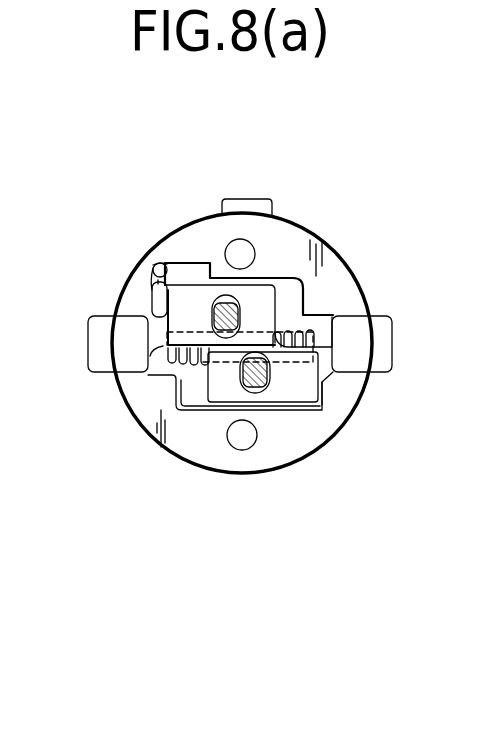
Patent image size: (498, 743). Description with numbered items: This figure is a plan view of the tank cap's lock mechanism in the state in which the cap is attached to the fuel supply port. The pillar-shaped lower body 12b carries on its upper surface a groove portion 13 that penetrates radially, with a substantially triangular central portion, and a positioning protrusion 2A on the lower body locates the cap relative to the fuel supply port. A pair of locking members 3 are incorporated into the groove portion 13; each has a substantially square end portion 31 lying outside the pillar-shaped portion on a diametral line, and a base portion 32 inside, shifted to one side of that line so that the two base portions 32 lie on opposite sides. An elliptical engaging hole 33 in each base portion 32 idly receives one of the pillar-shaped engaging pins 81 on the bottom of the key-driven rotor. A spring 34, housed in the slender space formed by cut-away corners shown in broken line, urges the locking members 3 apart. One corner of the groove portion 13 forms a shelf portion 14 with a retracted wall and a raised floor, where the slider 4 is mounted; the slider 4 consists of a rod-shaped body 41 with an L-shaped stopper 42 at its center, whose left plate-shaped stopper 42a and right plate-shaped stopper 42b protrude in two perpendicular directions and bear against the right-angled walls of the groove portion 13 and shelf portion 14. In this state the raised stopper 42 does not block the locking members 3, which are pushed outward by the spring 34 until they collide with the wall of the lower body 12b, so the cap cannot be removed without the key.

The positioning protrusion 2A is at (250, 201).
The locking member 3 is at (86, 346).
The slider 4 is at (151, 268).
The lower body 12b is at (330, 268).
The groove portion 13 is at (193, 389).
The shelf portion 14 is at (190, 281).
The end portion 31 is at (386, 347).
The base portion 32 is at (318, 393).
The engaging hole 33 is at (230, 338).
The spring 34 is at (305, 318).
The rod-shaped body 41 is at (152, 266).
The L-shaped stopper 42 is at (139, 263).
The left plate-shaped stopper 42a is at (157, 303).
The right plate-shaped stopper 42b is at (177, 262).
The engaging pin 81 is at (240, 315).